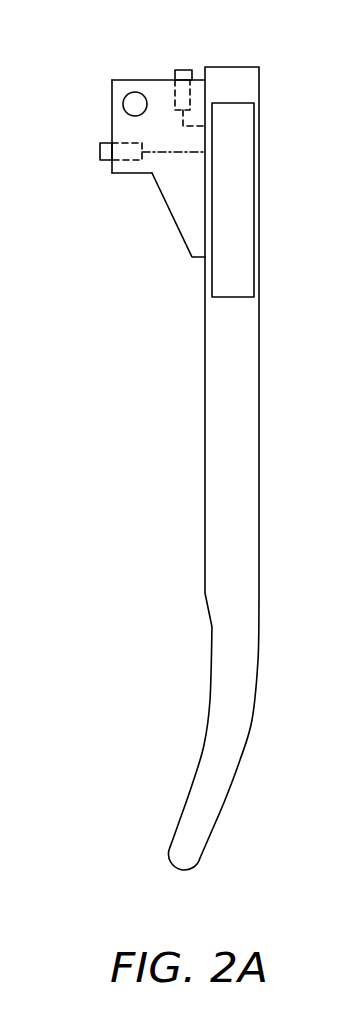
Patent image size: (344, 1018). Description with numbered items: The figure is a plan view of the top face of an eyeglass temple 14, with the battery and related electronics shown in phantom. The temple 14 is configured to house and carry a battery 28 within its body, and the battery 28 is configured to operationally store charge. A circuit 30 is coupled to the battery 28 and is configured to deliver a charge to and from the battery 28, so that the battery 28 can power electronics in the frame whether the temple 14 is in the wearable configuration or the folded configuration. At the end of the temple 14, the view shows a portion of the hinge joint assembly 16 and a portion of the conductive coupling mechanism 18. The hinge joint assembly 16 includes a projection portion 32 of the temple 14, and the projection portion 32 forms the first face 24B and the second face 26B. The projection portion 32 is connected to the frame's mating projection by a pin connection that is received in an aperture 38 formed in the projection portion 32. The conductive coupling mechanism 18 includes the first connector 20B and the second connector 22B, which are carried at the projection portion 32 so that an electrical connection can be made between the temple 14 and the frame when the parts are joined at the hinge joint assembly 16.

The temple 14 is at (260, 394).
The hinge joint assembly 16 is at (88, 67).
The conductive coupling mechanism 18 is at (100, 190).
The first connector 20B is at (184, 67).
The second connector 22B is at (100, 151).
The first face 24B is at (158, 80).
The second face 26B is at (112, 122).
The battery 28 is at (235, 203).
The circuit 30 is at (180, 160).
The projection portion 32 is at (179, 216).
The aperture 38 is at (135, 105).